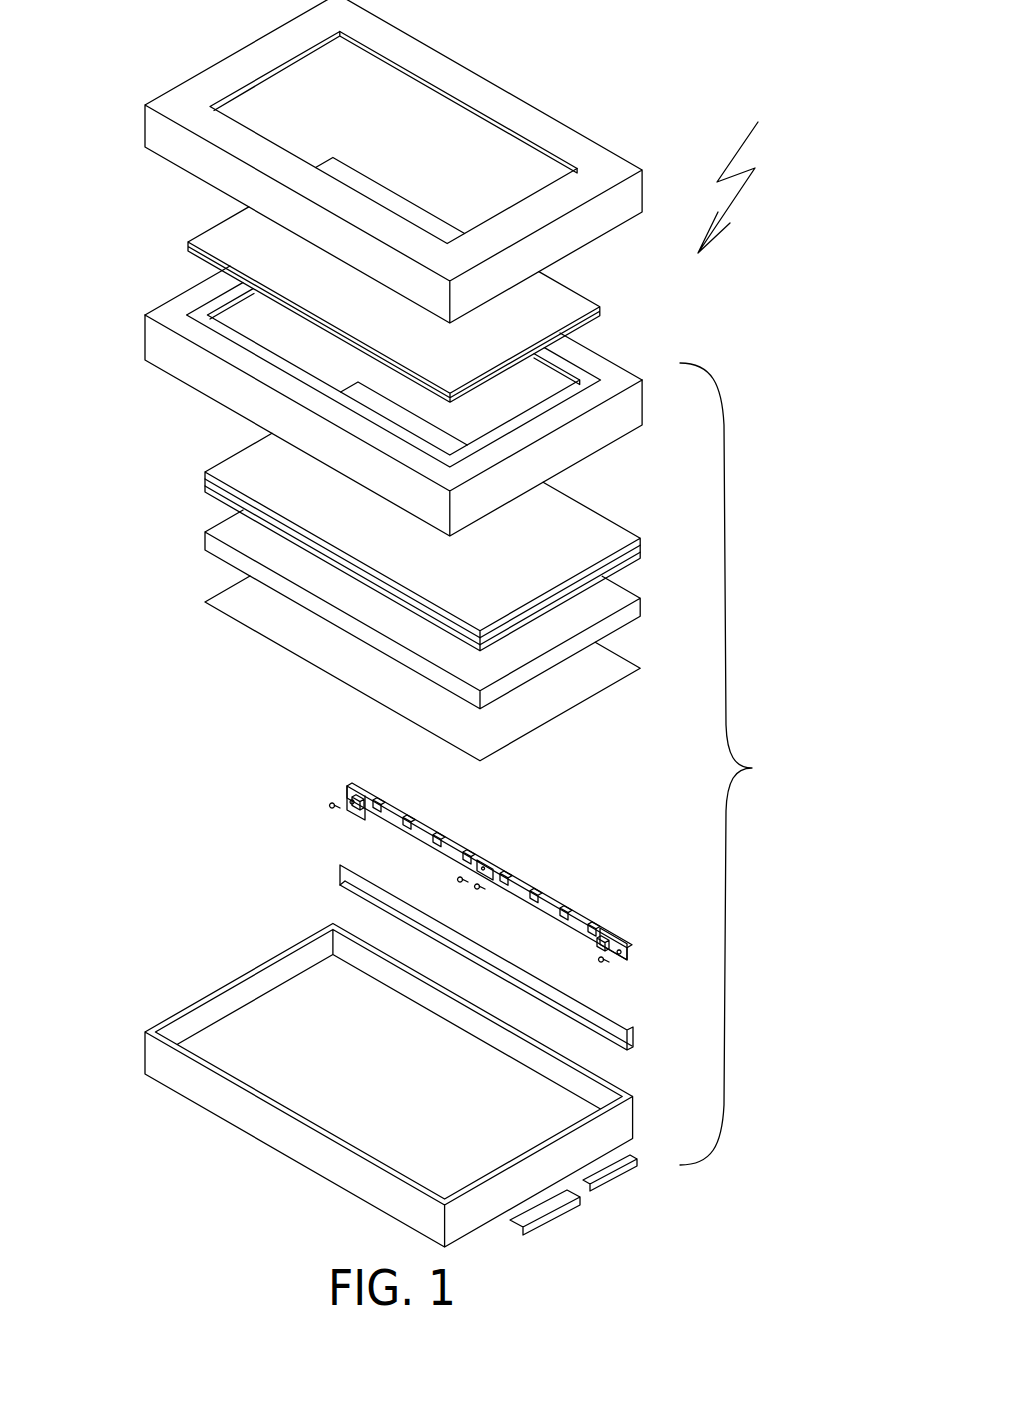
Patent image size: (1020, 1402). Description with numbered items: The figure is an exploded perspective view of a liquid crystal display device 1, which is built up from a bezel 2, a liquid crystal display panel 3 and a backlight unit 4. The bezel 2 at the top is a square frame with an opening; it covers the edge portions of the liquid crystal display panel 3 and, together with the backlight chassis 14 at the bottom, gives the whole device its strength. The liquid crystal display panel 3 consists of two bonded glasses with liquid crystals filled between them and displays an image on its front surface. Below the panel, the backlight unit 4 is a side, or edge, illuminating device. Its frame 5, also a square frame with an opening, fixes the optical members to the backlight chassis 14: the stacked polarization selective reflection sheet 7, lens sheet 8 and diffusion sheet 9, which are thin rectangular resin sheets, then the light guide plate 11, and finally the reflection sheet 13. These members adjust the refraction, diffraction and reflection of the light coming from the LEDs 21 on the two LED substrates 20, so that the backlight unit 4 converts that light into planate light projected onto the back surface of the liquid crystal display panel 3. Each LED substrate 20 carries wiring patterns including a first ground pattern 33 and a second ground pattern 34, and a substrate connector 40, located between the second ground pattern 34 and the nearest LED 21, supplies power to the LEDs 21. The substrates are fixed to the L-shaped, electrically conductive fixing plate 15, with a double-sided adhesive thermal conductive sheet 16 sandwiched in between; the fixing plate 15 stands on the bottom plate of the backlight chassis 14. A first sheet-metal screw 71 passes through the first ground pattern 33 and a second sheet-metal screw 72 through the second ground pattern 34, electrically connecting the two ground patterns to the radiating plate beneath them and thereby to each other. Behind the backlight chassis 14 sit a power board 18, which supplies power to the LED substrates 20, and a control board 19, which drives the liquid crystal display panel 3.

The liquid crystal display device 1 is at (734, 174).
The bezel 2 is at (522, 108).
The liquid crystal display panel 3 is at (212, 240).
The backlight unit 4 is at (728, 764).
The frame 5 is at (155, 345).
The polarization selective reflection sheet 7 is at (216, 458).
The lens sheet 8 is at (206, 478).
The diffusion sheet 9 is at (209, 490).
The light guide plate 11 is at (209, 546).
The reflection sheet 13 is at (237, 622).
The backlight chassis 14 is at (230, 976).
The fixing plate 15 is at (612, 1018).
The thermal conductive sheet 16 is at (358, 887).
The power board 18 is at (631, 1187).
The control board 19 is at (578, 1223).
The LED substrate 20 is at (443, 832).
The LED 21 is at (398, 824).
The first ground pattern 33 is at (481, 864).
The second ground pattern 34 is at (347, 792).
The substrate connector 40 is at (352, 797).
The first sheet-metal screw 71 is at (461, 880).
The second sheet-metal screw 72 is at (334, 805).